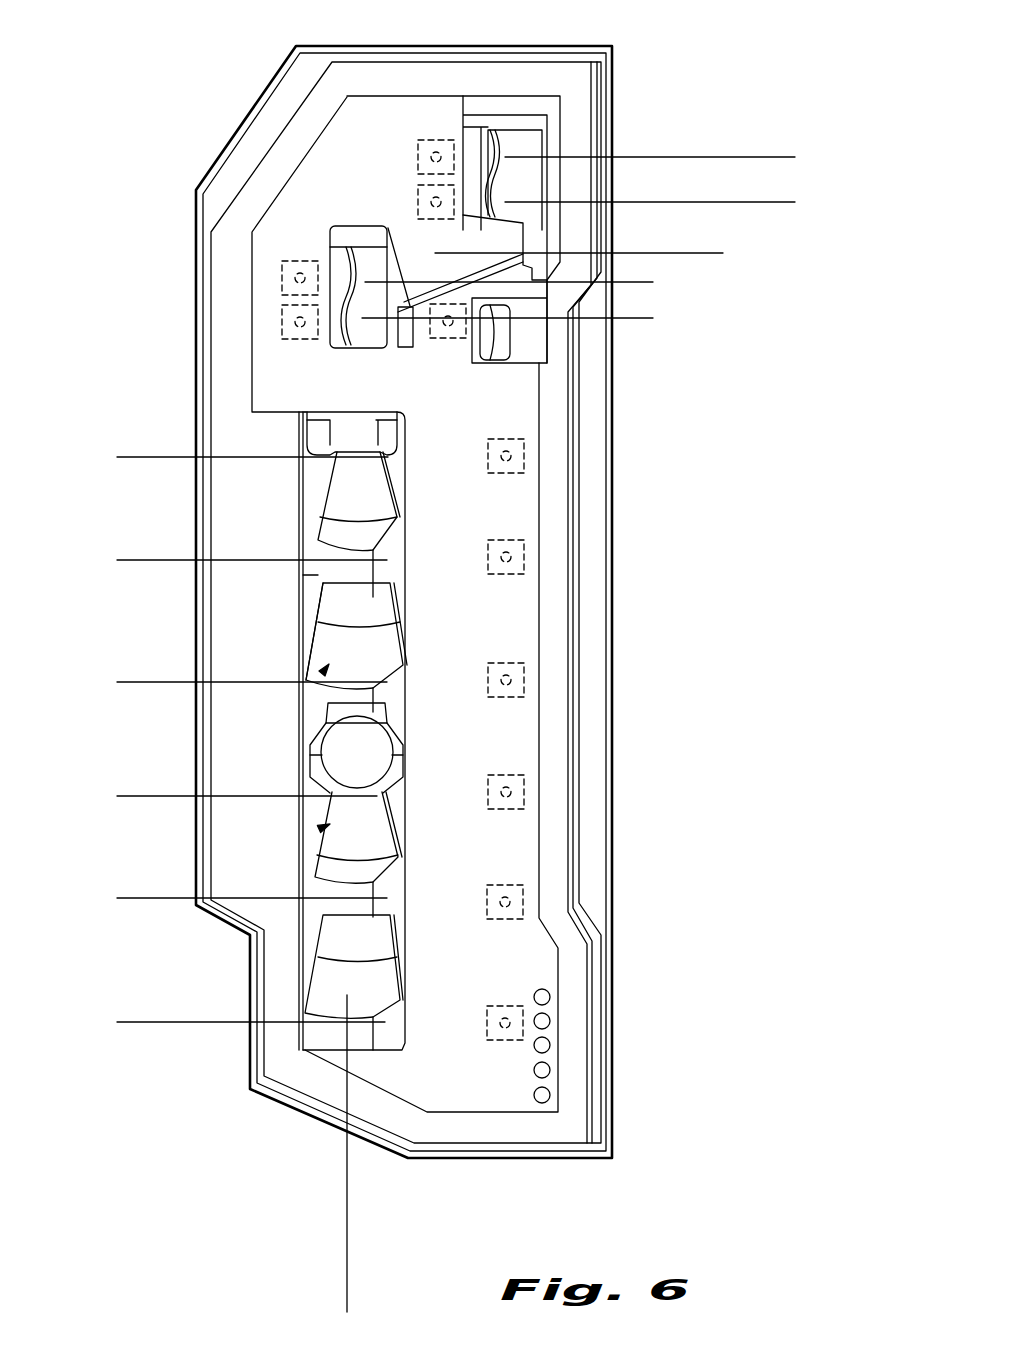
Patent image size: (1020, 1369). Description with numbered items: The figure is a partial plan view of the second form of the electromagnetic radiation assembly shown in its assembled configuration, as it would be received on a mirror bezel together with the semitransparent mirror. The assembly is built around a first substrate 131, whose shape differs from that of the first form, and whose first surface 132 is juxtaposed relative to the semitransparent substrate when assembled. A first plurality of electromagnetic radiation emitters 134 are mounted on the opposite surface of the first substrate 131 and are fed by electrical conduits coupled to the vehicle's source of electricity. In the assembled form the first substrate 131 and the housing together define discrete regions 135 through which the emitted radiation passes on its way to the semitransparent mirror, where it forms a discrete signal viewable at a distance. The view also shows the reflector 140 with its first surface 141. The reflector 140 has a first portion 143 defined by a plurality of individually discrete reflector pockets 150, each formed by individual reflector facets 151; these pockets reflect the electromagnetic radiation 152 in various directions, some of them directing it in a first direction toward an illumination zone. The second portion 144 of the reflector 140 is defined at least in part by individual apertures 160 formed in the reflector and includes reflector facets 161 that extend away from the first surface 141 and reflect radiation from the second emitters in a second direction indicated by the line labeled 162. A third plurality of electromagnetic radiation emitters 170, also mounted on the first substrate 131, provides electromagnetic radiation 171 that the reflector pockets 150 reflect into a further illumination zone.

The first substrate 131 is at (445, 665).
The first surface 132 is at (508, 510).
The first plurality of electromagnetic radiation emitters 134 is at (513, 433).
The discrete regions 135 is at (520, 130).
The reflector 140 is at (319, 591).
The first surface 141 is at (315, 573).
The first portion 143 is at (505, 130).
The second portion 144 is at (329, 664).
The reflector pockets 150 is at (475, 150).
The reflector facets 151 is at (397, 465).
The electromagnetic radiation 152 is at (157, 457).
The apertures 160 is at (343, 490).
The reflector facets 161 is at (383, 528).
The electromagnetic radiation 162 is at (345, 1250).
The third plurality of electromagnetic radiation emitters 170 is at (433, 303).
The electromagnetic radiation 171 is at (690, 253).